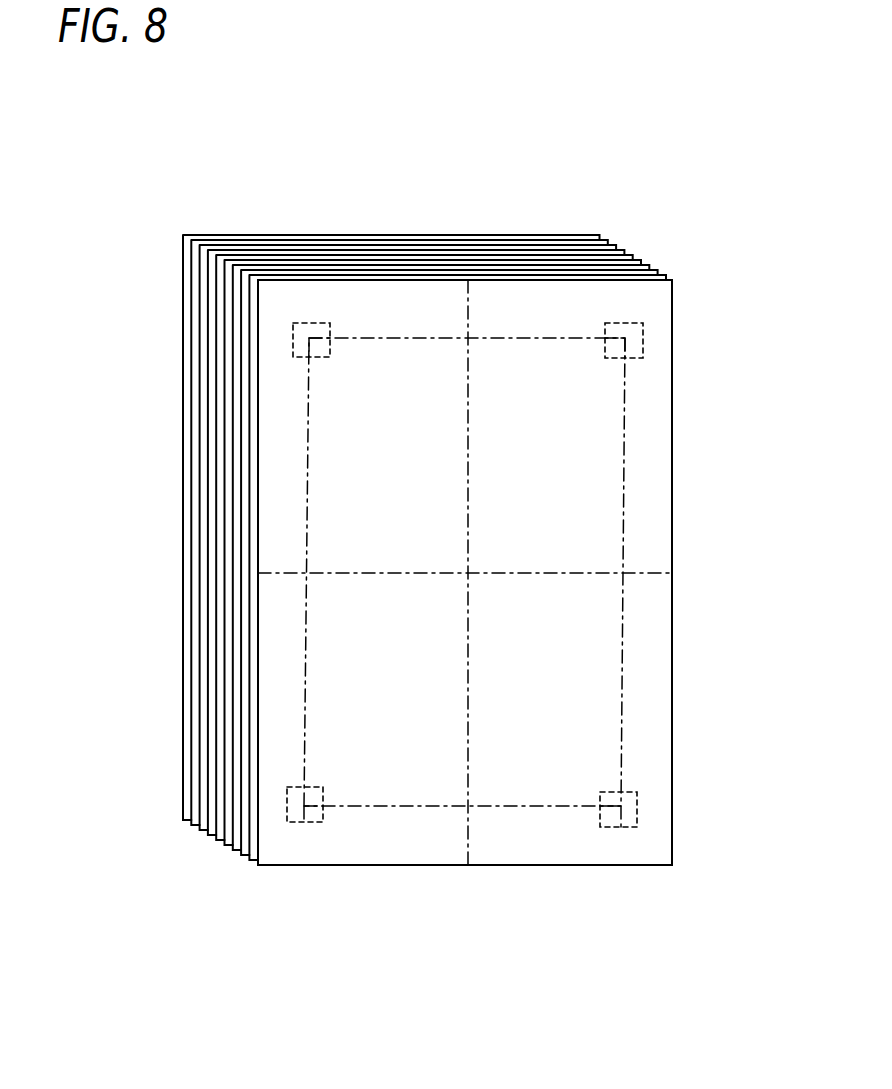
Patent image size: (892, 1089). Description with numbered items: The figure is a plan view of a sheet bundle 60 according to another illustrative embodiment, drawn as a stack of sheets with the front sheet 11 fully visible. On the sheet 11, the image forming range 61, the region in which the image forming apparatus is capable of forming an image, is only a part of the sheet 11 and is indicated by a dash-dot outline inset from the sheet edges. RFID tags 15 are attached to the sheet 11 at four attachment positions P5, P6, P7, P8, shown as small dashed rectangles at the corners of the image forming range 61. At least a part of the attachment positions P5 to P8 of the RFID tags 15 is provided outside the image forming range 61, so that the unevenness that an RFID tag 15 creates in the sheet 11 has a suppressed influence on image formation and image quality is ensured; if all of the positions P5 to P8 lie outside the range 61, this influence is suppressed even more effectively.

The sheet bundle 60 is at (450, 166).
The sheet 11 is at (677, 293).
The image forming range 61 is at (622, 666).
The RFID tag 15 is at (315, 325).
The attachment position P5 is at (334, 350).
The attachment position P6 is at (648, 340).
The attachment position P7 is at (618, 832).
The attachment position P8 is at (305, 826).